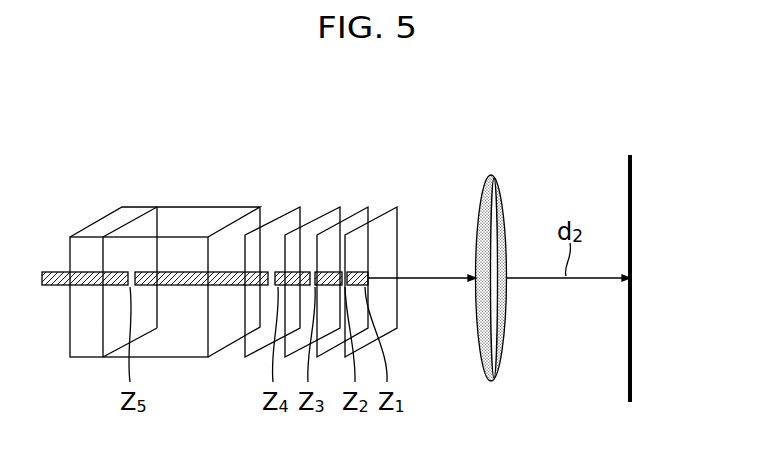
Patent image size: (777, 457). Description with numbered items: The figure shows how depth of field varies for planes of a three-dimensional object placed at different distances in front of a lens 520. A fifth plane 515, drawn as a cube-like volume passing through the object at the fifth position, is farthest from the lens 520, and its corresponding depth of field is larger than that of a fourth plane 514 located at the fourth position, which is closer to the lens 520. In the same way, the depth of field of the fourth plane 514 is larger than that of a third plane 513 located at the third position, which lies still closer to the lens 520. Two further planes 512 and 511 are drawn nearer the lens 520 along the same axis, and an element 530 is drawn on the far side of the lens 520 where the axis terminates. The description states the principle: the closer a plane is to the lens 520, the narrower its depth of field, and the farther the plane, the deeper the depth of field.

The first plate 511 is at (378, 220).
The second plate 512 is at (348, 217).
The third plane 513 is at (318, 217).
The fourth plane 514 is at (282, 208).
The fifth plane 515 is at (138, 218).
The lens 520 is at (490, 175).
The screen 530 is at (637, 173).